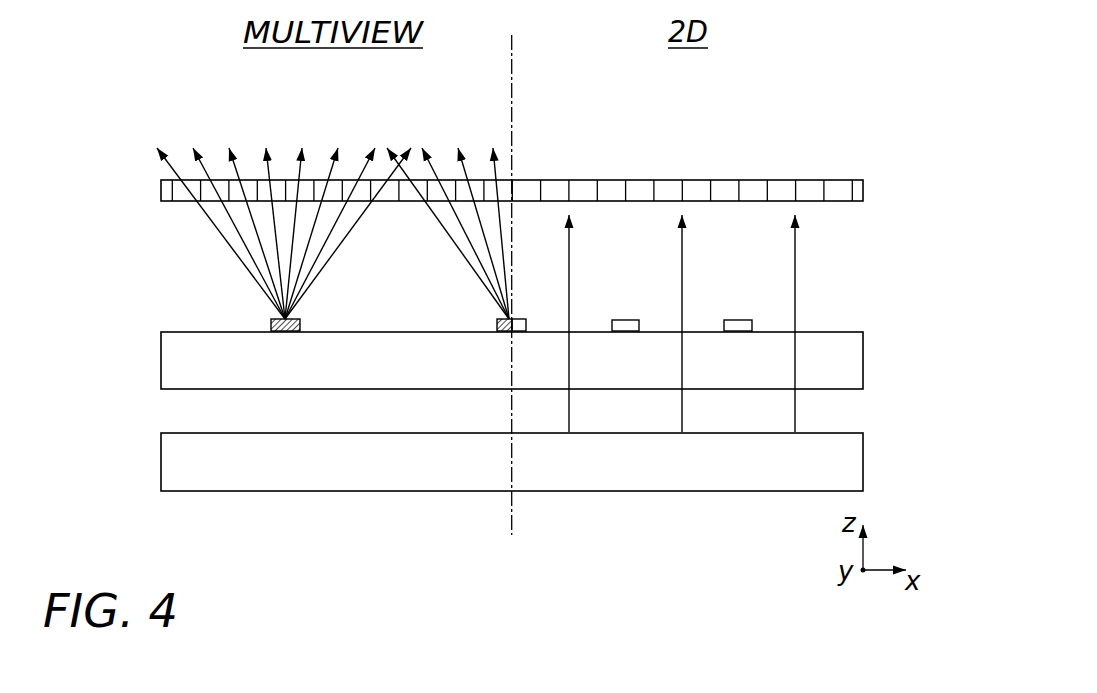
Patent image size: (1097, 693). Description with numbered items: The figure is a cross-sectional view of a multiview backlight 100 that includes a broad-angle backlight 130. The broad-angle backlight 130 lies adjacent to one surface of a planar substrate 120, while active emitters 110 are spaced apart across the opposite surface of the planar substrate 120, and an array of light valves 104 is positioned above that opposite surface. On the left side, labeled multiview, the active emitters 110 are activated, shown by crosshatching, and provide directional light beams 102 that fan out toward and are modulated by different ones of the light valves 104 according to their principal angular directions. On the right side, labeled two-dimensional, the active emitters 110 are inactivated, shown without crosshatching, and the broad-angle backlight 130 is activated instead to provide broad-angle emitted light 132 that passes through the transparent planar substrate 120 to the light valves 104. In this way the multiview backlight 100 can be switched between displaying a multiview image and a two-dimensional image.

The multiview backlight 100 is at (822, 70).
The directional light beams 102 is at (211, 245).
The light valves 104 is at (146, 182).
The active emitters 110 is at (261, 312).
The planar substrate 120 is at (167, 361).
The broad-angle backlight 130 is at (167, 461).
The broad-angle emitted light 132 is at (842, 228).